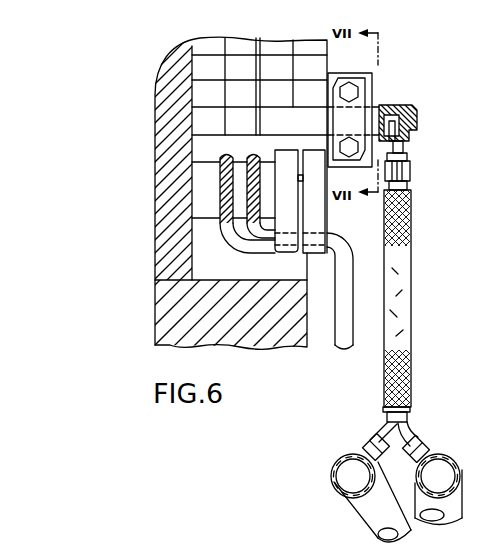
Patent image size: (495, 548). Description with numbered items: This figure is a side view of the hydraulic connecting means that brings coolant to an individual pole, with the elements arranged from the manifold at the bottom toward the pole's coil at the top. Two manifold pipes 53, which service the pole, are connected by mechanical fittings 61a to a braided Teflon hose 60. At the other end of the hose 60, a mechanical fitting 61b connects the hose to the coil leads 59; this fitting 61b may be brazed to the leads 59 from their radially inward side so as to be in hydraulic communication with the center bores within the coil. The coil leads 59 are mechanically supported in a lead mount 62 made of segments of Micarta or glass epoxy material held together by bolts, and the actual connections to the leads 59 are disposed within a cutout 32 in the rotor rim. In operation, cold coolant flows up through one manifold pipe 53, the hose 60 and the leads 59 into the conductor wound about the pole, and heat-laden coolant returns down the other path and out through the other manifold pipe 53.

The cutout 32 is at (191, 255).
The lead mount 62 is at (408, 88).
The coil leads 59 is at (417, 109).
The mechanical fittings 61b is at (411, 175).
The braided Teflon hose 60 is at (412, 293).
The mechanical fittings 61a is at (418, 440).
The manifold pipes 53 is at (334, 459).